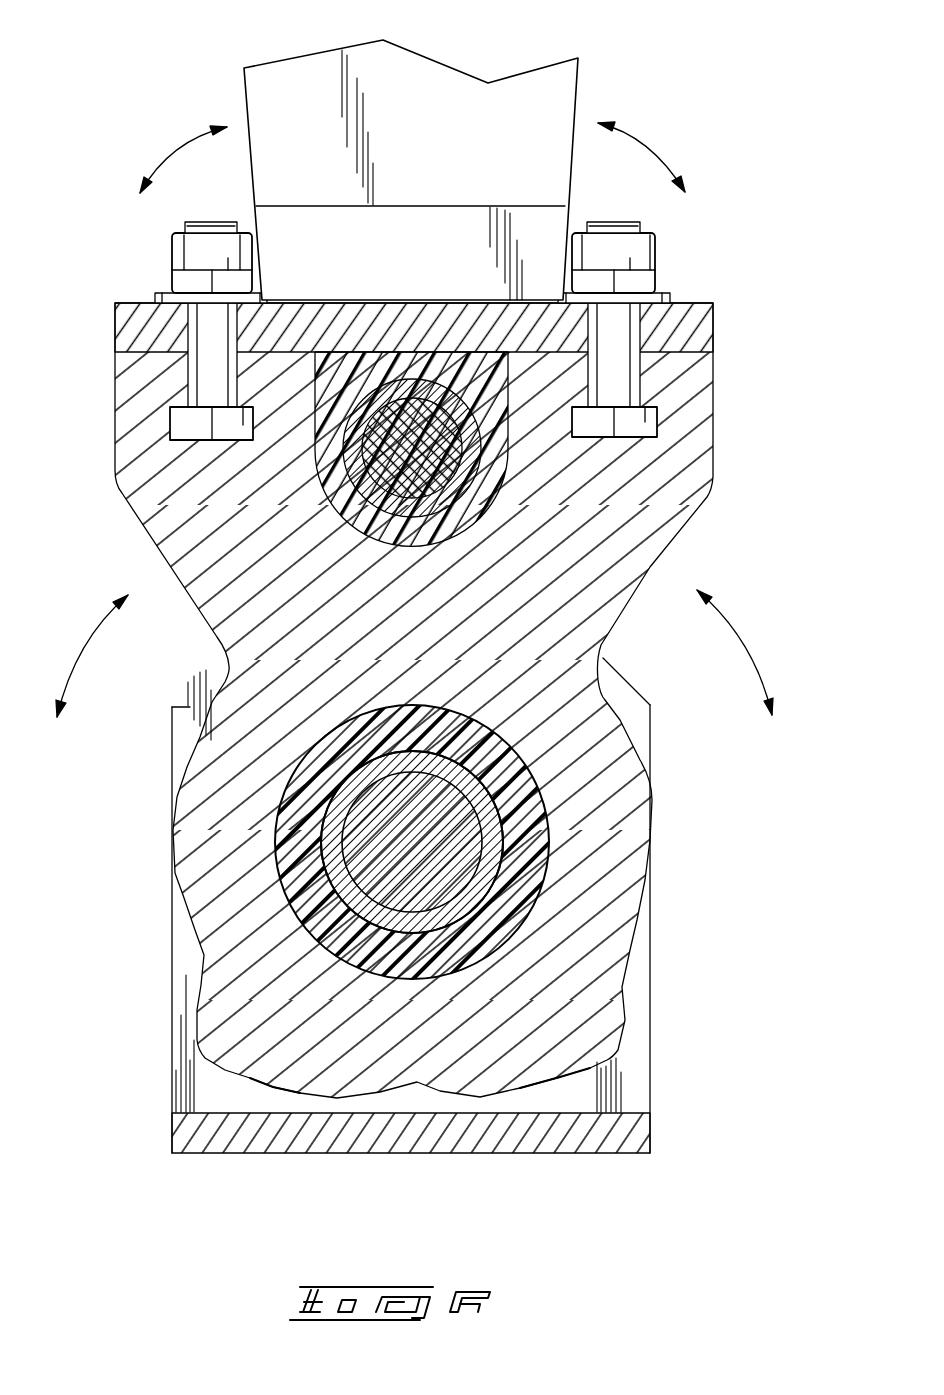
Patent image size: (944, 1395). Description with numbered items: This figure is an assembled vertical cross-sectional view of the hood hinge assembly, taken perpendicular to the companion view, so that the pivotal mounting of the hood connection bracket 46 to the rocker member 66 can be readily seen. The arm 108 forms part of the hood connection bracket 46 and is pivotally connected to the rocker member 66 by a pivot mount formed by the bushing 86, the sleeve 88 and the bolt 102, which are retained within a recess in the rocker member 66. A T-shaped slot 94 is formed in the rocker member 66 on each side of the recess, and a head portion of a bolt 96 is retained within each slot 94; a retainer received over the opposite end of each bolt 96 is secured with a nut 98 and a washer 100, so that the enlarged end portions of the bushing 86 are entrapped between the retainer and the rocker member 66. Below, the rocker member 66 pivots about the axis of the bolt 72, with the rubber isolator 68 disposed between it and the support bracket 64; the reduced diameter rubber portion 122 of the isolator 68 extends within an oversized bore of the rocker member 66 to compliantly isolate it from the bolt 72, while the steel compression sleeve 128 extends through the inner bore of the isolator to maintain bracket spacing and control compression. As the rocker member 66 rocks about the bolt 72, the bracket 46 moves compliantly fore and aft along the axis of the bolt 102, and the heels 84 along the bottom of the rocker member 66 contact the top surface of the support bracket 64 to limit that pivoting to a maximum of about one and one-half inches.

The hood connection bracket 46 is at (598, 73).
The support bracket 64 is at (193, 690).
The rocker member 66 is at (682, 533).
The rubber isolator 68 is at (558, 834).
The bolt 72 is at (368, 838).
The heels 84 is at (272, 1083).
The bushing 86 is at (395, 537).
The sleeve 88 is at (440, 508).
The T-shaped slot 94 is at (585, 413).
The bolt 96 is at (203, 373).
The nut 98 is at (190, 252).
The washer 100 is at (162, 297).
The bolt 102 is at (395, 465).
The arm 108 is at (408, 75).
The reduced diameter portion 122 is at (532, 867).
The steel compression sleeve 128 is at (452, 915).